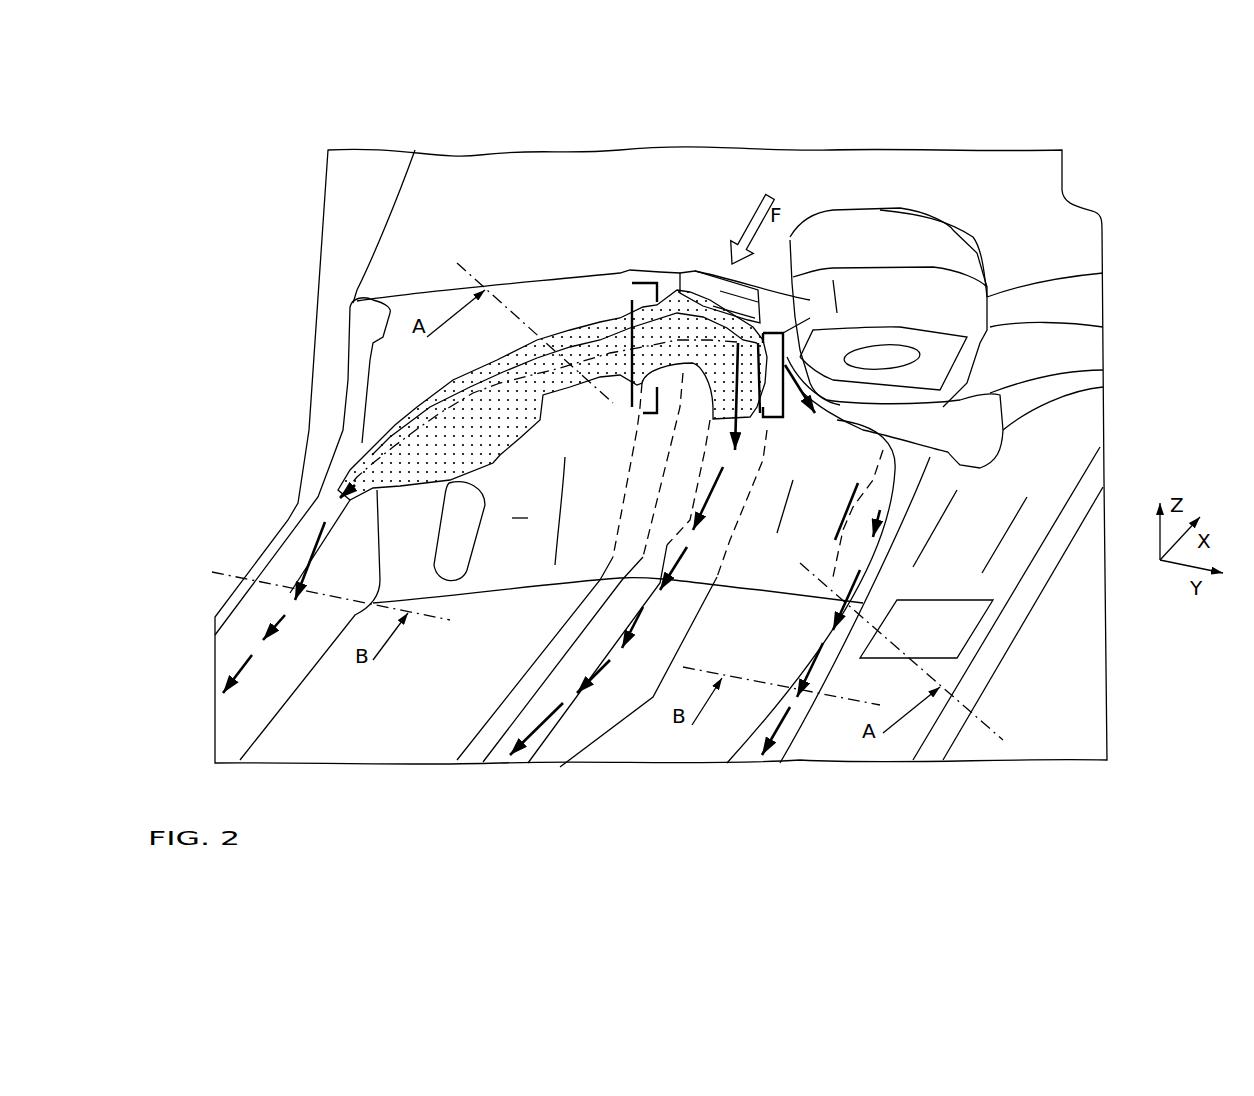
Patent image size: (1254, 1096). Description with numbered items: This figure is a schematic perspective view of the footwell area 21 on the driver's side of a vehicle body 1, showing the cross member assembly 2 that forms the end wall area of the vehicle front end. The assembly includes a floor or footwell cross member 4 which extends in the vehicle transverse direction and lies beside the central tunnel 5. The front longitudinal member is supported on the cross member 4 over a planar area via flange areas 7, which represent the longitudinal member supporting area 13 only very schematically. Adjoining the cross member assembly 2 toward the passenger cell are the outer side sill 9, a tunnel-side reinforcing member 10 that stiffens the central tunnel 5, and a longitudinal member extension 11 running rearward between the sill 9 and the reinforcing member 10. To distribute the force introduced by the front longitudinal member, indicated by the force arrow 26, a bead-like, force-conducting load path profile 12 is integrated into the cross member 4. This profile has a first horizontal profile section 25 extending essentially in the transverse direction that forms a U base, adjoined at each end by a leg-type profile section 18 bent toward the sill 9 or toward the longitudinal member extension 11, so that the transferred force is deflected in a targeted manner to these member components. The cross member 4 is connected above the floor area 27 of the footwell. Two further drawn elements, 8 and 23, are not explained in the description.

The vehicle body 1 is at (1157, 293).
The cross member assembly 2 is at (1057, 227).
The floor or footwell cross member 4 is at (499, 519).
The central tunnel 5 is at (894, 742).
The flange areas 7 is at (643, 283).
The channel 8 is at (490, 648).
The outer side sill 9 is at (243, 705).
The reinforcing member 10 is at (745, 750).
The longitudinal member extension 11 is at (503, 747).
The load path profile 12 is at (560, 330).
The longitudinal member supporting area 13 is at (687, 257).
The leg-type profile section 18 is at (432, 452).
The footwell area 21 is at (420, 695).
The center line 23 is at (603, 355).
The first horizontal profile section 25 is at (507, 357).
The force arrow 26 is at (245, 660).
The floor area 27 is at (357, 742).